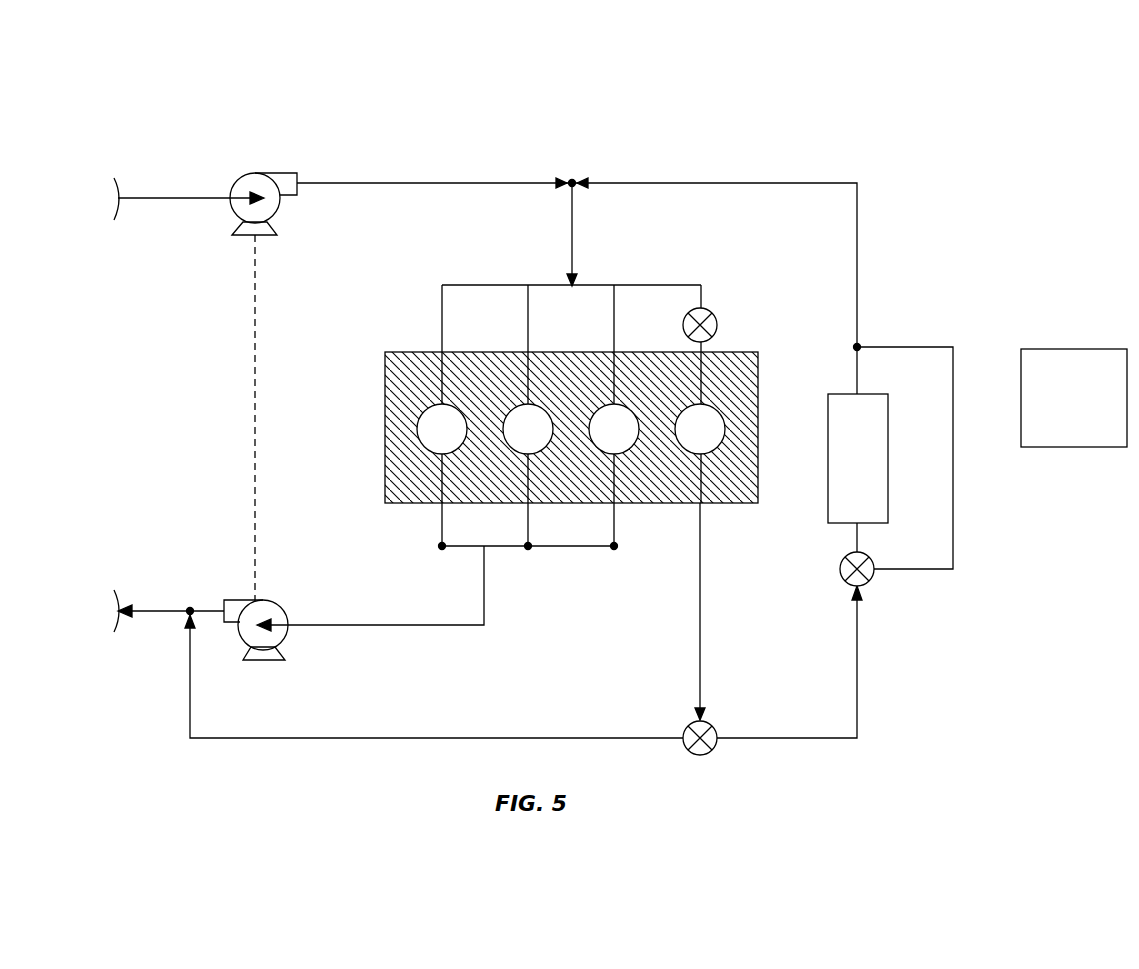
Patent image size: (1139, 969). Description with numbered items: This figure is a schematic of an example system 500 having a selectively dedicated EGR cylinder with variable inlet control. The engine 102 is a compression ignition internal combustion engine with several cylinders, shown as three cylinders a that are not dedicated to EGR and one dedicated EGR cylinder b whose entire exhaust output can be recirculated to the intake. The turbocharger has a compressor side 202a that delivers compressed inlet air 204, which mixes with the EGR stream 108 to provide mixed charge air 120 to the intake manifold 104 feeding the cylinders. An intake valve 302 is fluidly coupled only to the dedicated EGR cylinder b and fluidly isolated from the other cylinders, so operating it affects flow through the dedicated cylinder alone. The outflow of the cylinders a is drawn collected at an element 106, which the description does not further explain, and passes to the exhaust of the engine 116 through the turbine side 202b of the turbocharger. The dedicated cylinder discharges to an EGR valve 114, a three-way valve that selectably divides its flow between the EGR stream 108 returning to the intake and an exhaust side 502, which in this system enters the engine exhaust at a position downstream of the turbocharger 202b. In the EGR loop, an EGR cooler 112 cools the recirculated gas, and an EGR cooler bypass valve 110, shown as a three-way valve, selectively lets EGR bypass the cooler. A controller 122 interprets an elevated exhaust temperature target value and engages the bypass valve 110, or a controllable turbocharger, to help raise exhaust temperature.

The system 500 is at (243, 64).
The compressor side 202a is at (278, 173).
The turbine side 202b is at (265, 662).
The compressed inlet air 204 is at (412, 183).
The mixed charge air 120 is at (570, 218).
The intake manifold 104 is at (467, 285).
The intake valve 302 is at (717, 323).
The engine 102 is at (383, 428).
The coolant outlet manifold 106 is at (572, 548).
The exhaust of the engine 116 is at (405, 627).
The exhaust side 502 is at (412, 737).
The EGR valve 114 is at (700, 756).
The EGR stream 108 is at (800, 740).
The EGR cooler bypass valve 110 is at (840, 570).
The EGR cooler 112 is at (840, 394).
The controller 122 is at (1057, 411).